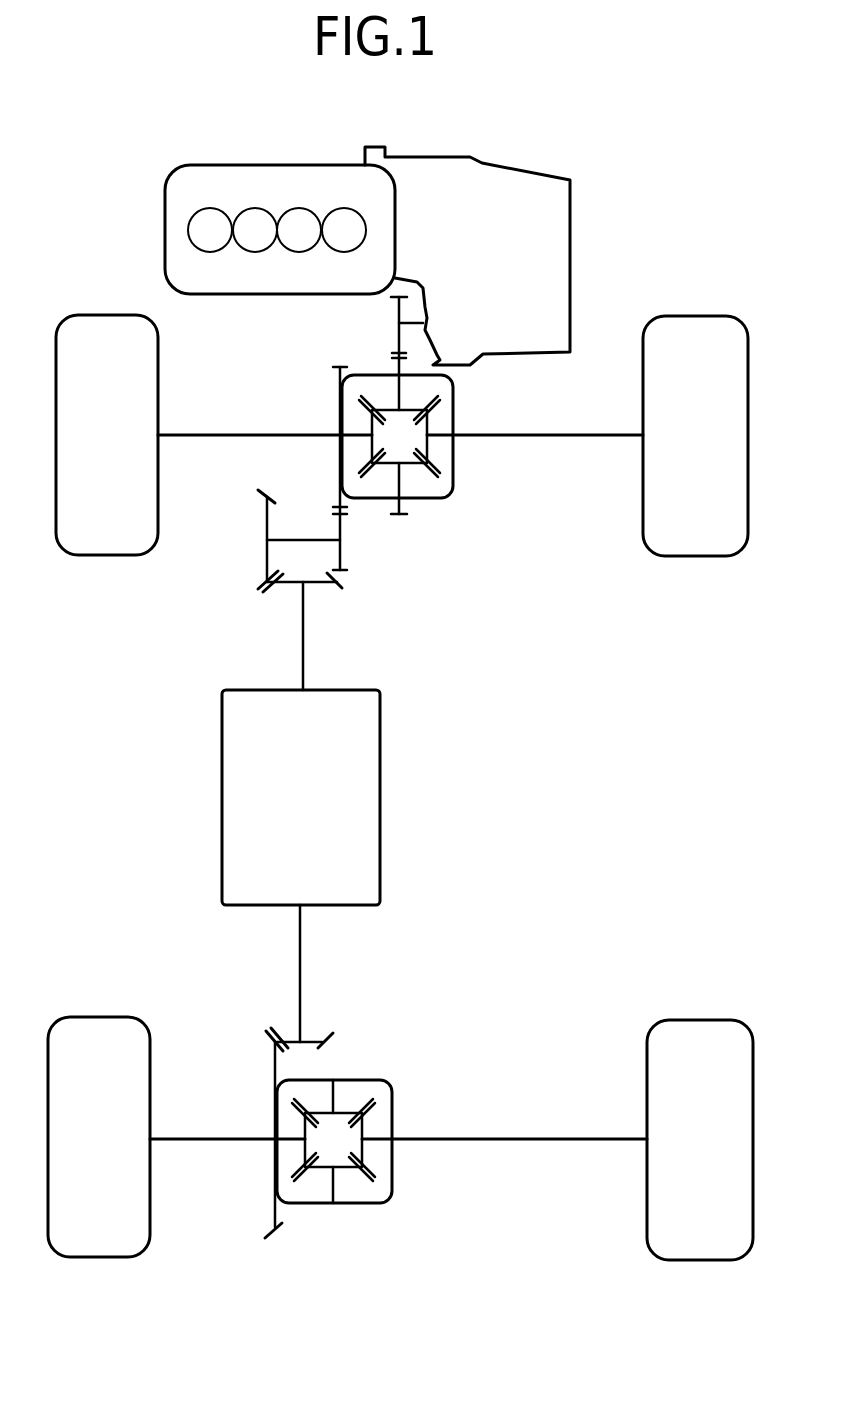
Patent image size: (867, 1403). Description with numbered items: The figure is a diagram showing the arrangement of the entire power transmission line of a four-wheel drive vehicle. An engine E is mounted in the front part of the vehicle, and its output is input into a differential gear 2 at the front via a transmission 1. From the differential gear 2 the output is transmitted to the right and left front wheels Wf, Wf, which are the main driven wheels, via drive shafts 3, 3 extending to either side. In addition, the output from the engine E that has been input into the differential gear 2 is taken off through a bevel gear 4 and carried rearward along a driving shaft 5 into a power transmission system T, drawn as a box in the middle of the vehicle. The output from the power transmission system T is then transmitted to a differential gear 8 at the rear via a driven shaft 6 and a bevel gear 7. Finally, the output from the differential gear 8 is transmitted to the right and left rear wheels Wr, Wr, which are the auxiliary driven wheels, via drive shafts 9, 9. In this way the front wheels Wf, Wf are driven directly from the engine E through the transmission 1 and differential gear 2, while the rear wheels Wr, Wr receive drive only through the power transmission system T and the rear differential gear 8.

The engine E is at (222, 160).
The transmission 1 is at (565, 270).
The differential gear 2 is at (465, 413).
The drive shafts 3 is at (228, 434).
The bevel gear 4 is at (264, 608).
The driving shaft 5 is at (307, 622).
The power transmission system T is at (294, 803).
The driven shaft 6 is at (302, 970).
The bevel gear 7 is at (258, 1026).
The differential gear 8 is at (404, 1110).
The drive shafts 9 is at (210, 1137).
The front wheels Wf is at (108, 323).
The rear wheels Wr is at (101, 1027).